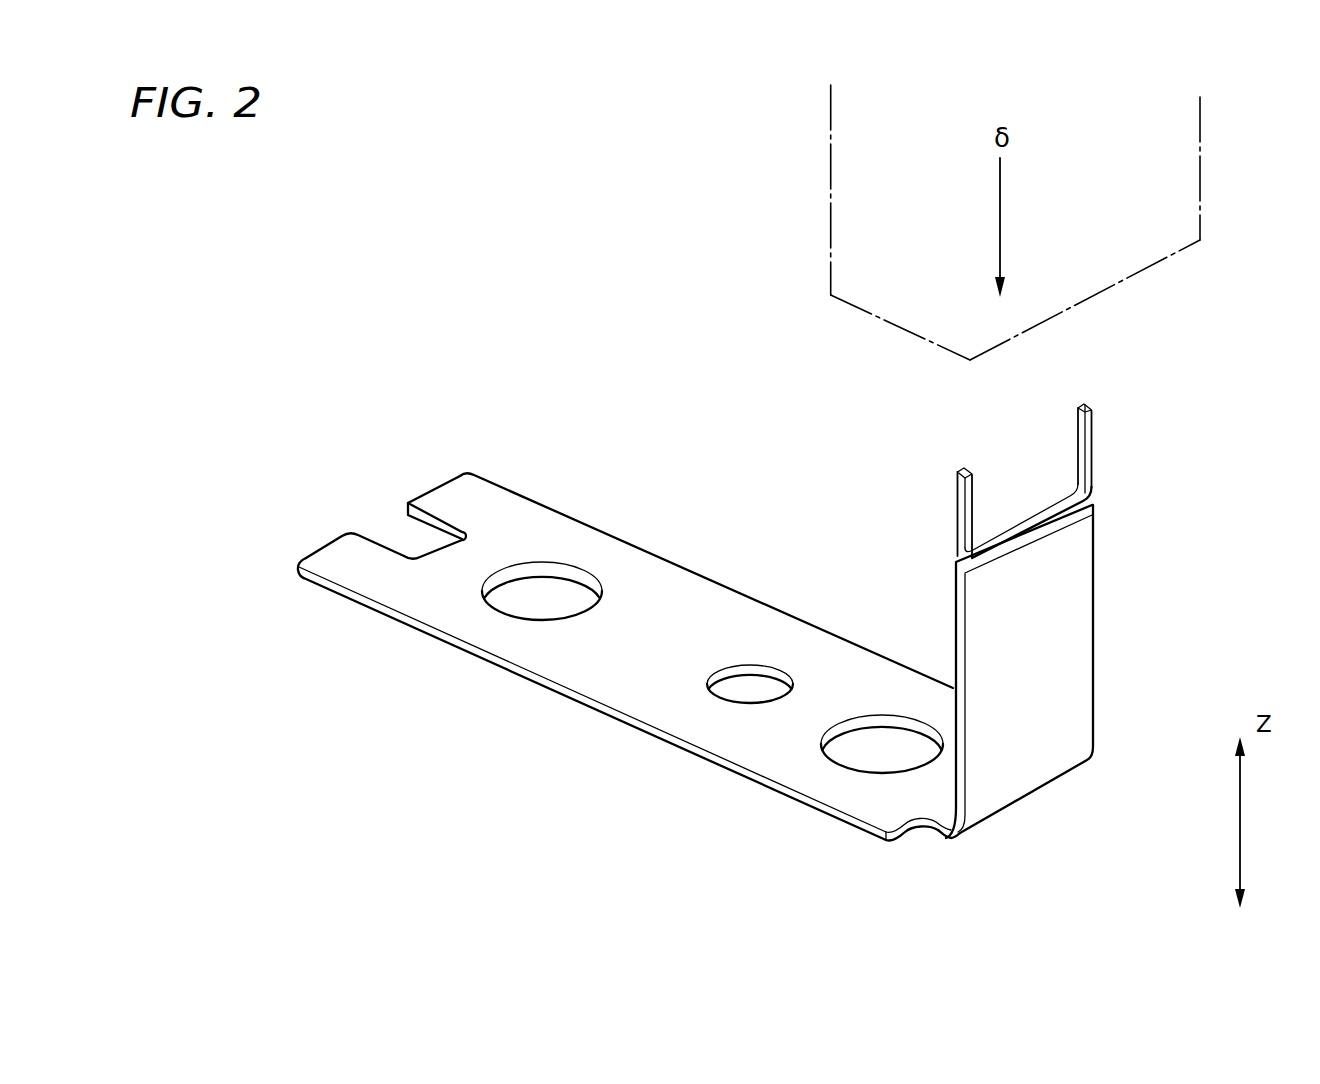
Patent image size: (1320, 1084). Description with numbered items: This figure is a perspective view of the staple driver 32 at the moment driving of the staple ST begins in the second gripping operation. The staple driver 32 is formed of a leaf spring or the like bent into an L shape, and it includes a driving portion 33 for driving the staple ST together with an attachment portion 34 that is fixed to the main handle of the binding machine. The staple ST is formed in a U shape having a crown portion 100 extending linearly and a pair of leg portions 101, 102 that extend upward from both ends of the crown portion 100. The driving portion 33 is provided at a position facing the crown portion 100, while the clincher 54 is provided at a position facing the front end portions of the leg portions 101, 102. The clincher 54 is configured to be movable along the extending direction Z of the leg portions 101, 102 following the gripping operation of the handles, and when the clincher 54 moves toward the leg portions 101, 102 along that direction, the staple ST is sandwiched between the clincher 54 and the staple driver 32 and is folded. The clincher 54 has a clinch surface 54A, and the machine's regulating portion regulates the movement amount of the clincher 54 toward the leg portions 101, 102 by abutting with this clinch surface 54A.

The staple driver 32 is at (800, 900).
The driving portion 33 is at (1093, 622).
The attachment portion 34 is at (620, 720).
The clincher 54 is at (818, 233).
The clinch surface 54A is at (903, 329).
The crown portion 100 is at (1017, 527).
The leg portion 101 is at (1093, 450).
The leg portion 102 is at (957, 515).
The staple ST is at (1025, 440).